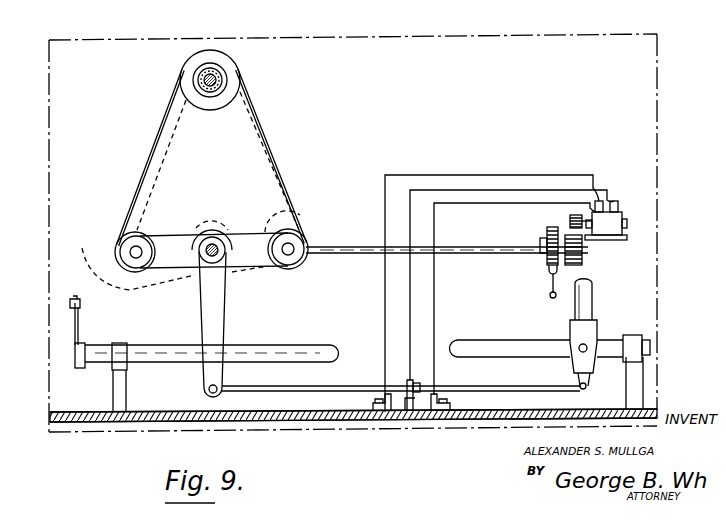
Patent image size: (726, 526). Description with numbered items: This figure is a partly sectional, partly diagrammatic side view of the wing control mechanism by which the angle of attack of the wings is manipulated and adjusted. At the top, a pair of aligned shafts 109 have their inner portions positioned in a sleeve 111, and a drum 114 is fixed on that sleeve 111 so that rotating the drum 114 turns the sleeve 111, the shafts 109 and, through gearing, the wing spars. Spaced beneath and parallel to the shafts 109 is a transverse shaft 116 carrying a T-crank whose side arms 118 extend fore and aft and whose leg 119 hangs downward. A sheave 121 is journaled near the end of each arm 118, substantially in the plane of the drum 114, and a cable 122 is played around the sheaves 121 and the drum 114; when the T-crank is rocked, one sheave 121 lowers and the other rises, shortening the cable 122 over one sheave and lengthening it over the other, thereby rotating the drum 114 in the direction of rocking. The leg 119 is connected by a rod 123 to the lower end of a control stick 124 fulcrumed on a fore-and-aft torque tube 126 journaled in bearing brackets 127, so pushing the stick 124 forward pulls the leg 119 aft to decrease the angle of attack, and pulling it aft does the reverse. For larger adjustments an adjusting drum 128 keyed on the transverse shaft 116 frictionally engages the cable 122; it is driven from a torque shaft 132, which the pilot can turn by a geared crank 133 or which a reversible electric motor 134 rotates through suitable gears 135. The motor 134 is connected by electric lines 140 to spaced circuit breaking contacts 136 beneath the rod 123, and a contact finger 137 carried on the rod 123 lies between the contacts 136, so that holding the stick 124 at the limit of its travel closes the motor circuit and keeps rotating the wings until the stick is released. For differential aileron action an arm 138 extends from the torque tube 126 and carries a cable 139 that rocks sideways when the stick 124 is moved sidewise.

The shaft 109 is at (211, 76).
The sleeve 111 is at (217, 88).
The drum 114 is at (234, 72).
The transverse shaft 116 is at (216, 244).
The side arm 118 is at (258, 263).
The leg 119 is at (220, 320).
The sheave 121 is at (120, 249).
The cable 122 is at (276, 162).
The rod 123 is at (344, 389).
The control stick 124 is at (592, 304).
The torque tube 126 is at (313, 345).
The bearing bracket 127 is at (118, 394).
The adjusting drum 128 is at (205, 231).
The torque shaft 132 is at (361, 251).
The geared crank 133 is at (545, 258).
The electric motor 134 is at (620, 229).
The gears 135 is at (565, 225).
The circuit breaking contacts 136 is at (389, 416).
The contact finger 137 is at (418, 416).
The arm 138 is at (78, 327).
The cable 139 is at (80, 304).
The electric lines 140 is at (501, 203).